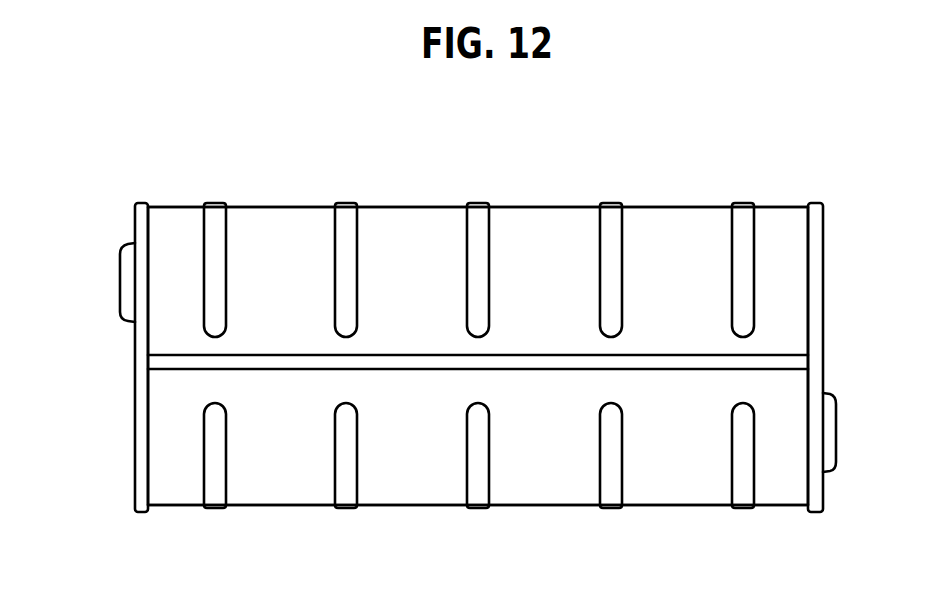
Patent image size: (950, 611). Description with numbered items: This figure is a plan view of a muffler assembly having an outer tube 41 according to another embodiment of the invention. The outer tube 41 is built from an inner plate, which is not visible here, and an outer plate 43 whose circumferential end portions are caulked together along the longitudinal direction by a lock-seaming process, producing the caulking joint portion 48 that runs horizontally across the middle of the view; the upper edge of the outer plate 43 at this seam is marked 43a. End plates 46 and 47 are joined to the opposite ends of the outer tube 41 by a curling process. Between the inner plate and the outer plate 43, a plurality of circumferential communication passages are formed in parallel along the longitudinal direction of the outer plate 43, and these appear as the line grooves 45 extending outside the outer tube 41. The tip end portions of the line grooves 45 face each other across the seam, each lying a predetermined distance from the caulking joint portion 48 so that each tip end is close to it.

The outer tube 41 is at (281, 196).
The outer plate 43 is at (681, 228).
The center rib upper edge 43a is at (180, 345).
The line grooves 45 is at (480, 215).
The end plate 46 is at (141, 208).
The end plate 47 is at (818, 203).
The caulking joint portion 48 is at (775, 362).